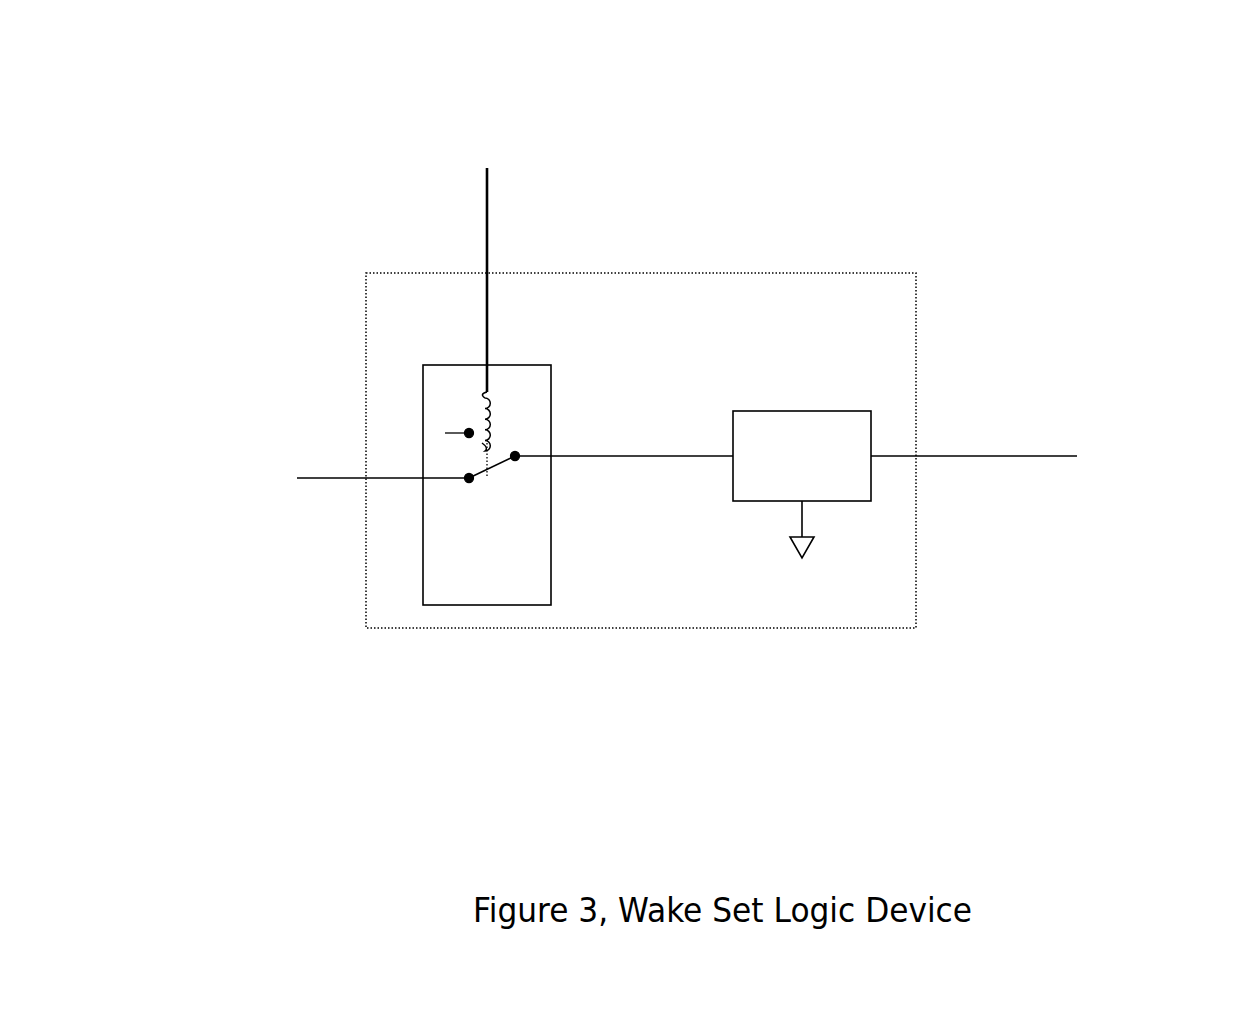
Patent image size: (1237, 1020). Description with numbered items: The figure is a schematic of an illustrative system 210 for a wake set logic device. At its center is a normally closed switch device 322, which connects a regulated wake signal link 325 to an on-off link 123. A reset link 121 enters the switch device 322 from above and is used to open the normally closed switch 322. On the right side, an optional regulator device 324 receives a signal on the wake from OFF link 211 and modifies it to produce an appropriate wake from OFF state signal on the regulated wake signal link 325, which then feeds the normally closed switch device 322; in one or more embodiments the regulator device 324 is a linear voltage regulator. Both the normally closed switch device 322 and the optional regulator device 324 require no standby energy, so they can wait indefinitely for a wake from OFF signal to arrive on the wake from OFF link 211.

The system 210 is at (212, 30).
The reset link 121 is at (478, 223).
The normally closed switch device 322 is at (503, 430).
The on-off link 123 is at (310, 470).
The regulated wake signal link 325 is at (641, 450).
The regulator device 324 is at (847, 427).
The wake from OFF link 211 is at (1030, 456).